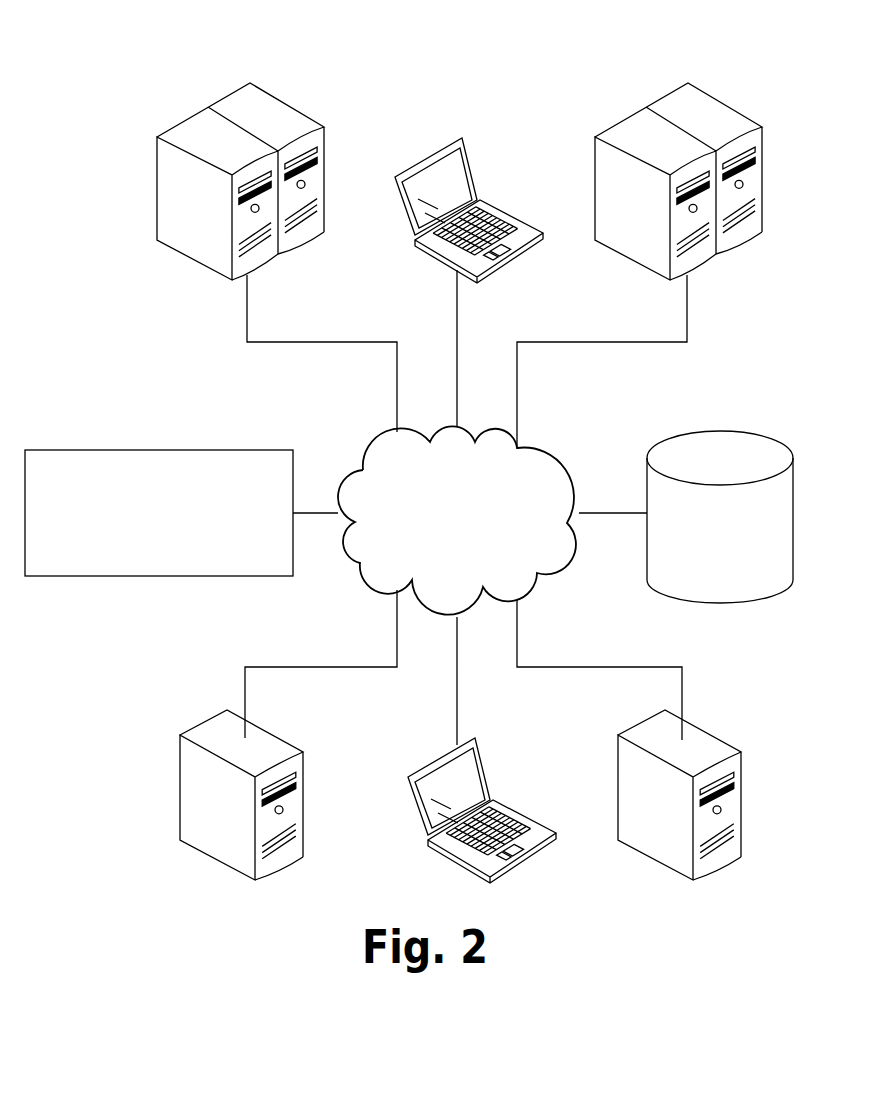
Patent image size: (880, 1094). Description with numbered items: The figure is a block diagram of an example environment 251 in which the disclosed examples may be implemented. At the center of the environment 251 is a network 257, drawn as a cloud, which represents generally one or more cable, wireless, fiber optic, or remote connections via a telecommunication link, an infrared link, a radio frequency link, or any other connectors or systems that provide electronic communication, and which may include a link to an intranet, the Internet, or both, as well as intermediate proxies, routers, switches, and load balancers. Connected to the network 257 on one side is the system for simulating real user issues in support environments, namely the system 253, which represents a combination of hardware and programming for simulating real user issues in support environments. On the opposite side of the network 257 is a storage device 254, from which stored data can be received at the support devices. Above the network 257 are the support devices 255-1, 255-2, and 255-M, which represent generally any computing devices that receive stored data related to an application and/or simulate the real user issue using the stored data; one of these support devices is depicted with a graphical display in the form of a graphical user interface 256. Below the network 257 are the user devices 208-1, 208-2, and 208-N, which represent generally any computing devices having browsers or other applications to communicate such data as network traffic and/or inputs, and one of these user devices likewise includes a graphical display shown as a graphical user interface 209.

The environment 251 is at (134, 60).
The system for simulating real user issues in support environments 253 is at (147, 450).
The storage device 254 is at (733, 428).
The support device 255-1 is at (272, 110).
The support device 255-2 is at (498, 208).
The support device 255-M is at (679, 163).
The graphical user interface 256 is at (455, 167).
The network 257 is at (557, 440).
The user device 208-1 is at (260, 747).
The user device 208-2 is at (513, 807).
The user device 208-N is at (685, 781).
The graphical user interface 209 is at (467, 768).